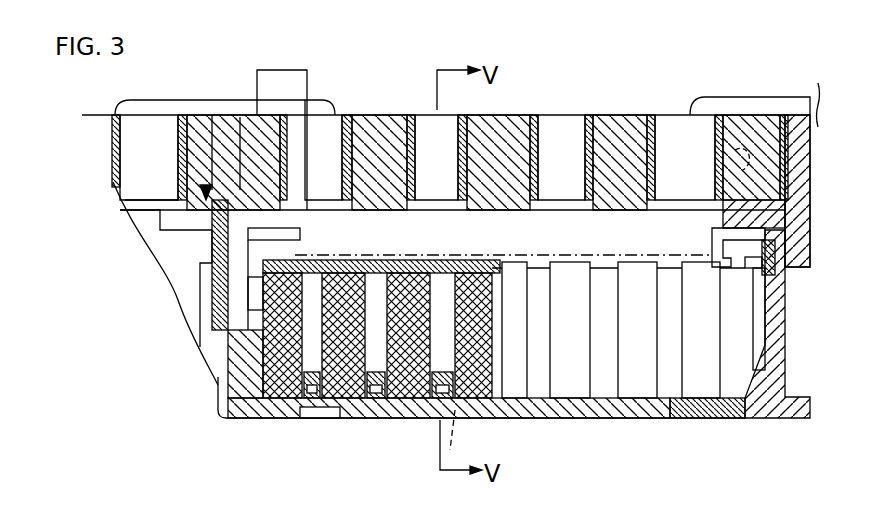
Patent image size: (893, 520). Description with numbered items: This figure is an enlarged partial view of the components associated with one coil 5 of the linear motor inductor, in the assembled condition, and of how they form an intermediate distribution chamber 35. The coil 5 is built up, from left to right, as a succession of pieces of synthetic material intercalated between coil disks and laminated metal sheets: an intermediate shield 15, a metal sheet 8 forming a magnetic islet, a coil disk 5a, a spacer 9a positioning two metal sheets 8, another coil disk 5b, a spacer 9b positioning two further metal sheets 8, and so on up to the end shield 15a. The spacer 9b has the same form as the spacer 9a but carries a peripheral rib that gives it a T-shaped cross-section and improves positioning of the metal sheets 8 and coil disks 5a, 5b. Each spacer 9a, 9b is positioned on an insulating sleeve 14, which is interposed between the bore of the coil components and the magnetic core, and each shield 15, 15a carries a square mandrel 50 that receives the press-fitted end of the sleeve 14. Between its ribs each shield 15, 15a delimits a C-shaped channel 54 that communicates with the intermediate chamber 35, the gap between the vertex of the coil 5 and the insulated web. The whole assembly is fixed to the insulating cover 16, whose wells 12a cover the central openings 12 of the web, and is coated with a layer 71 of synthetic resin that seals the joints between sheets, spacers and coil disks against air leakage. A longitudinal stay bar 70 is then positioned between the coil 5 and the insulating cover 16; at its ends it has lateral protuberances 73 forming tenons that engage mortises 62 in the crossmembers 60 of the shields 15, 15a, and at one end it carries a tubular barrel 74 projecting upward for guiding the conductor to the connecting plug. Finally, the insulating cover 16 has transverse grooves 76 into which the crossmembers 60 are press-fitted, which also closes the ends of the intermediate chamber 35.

The central opening 12 is at (345, 116).
The well 12a is at (412, 130).
The tubular barrel 74 is at (290, 86).
The transverse groove 76 is at (212, 115).
The crossmember 60 is at (240, 117).
The longitudinal stay bar 70 is at (540, 220).
The insulating cover 16 is at (592, 100).
The layer of synthetic resin 71 is at (655, 258).
The intermediate chamber 35 is at (770, 232).
The mortise 62 is at (775, 252).
The lateral protuberance 73 is at (762, 262).
The C-shaped channel 54 is at (760, 306).
The end shield 15a is at (778, 352).
The sleeve 14 is at (622, 410).
The mandrel 50 is at (705, 410).
The intermediate shield 15 is at (245, 393).
The laminated metal sheet 8 is at (263, 327).
The coil disk 5a is at (276, 398).
The coil disk 5b is at (350, 398).
The coil 5 is at (470, 265).
The spacer 9a is at (320, 398).
The spacer 9b is at (372, 398).